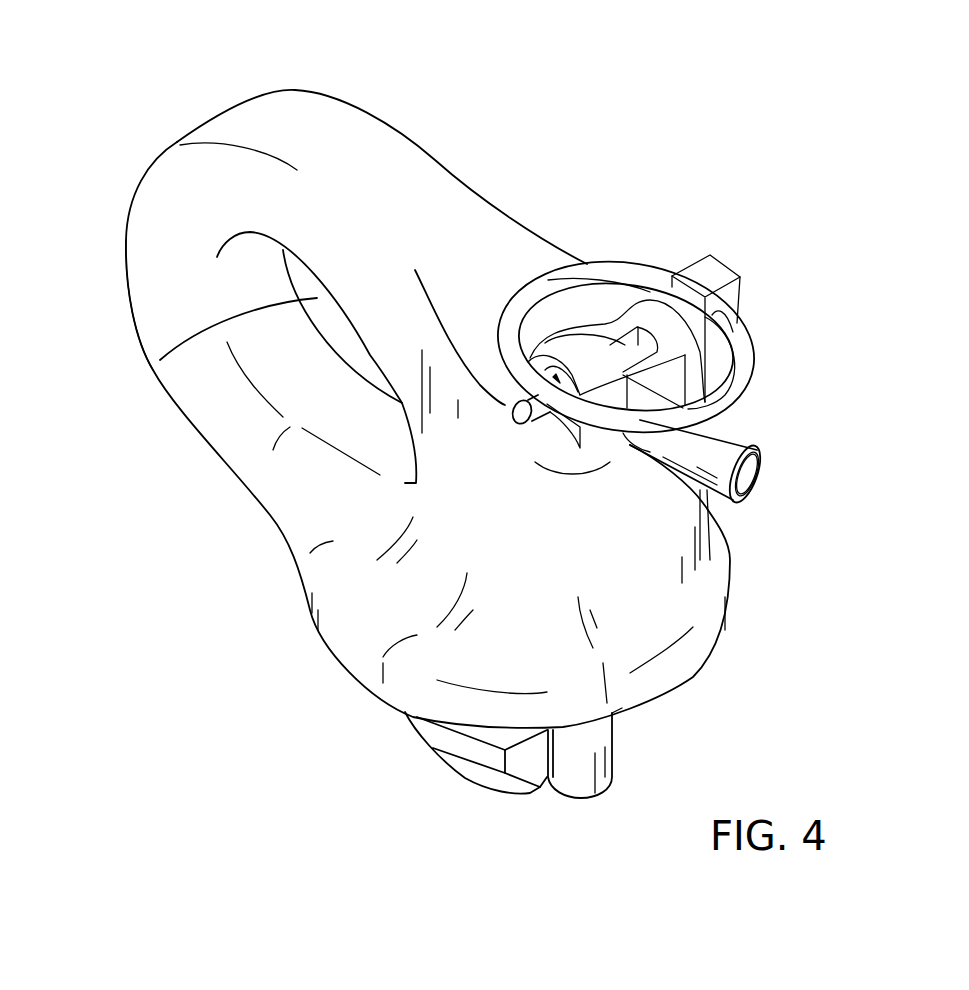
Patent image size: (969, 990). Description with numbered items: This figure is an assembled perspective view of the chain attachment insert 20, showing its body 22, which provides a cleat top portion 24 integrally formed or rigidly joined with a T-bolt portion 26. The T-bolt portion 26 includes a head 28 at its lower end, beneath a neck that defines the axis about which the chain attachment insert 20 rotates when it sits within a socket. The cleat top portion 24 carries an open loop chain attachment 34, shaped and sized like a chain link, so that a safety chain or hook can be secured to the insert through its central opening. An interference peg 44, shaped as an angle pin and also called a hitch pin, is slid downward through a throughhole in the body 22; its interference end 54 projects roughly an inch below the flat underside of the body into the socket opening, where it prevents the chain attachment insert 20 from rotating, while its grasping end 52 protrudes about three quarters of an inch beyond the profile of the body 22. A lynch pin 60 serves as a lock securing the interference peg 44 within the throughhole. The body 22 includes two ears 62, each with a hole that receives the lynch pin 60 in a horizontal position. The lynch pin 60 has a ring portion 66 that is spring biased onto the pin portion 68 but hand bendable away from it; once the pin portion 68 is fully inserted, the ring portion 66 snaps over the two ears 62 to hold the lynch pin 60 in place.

The chain attachment insert 20 is at (462, 105).
The body 22 is at (479, 254).
The cleat top portion 24 is at (347, 565).
The T-bolt portion 26 is at (160, 360).
The head 28 is at (490, 759).
The open loop chain attachment 34 is at (155, 252).
The interference peg 44 is at (753, 477).
The grasping end 52 is at (730, 445).
The interference end 54 is at (603, 770).
The lynch pin 60 is at (623, 275).
The ears 62 is at (610, 383).
The ring portion 66 is at (548, 280).
The pin portion 68 is at (640, 320).